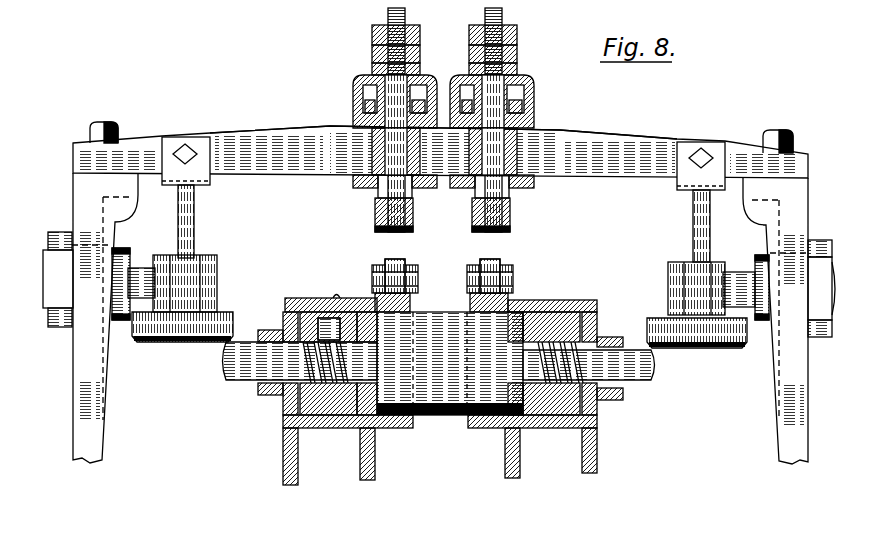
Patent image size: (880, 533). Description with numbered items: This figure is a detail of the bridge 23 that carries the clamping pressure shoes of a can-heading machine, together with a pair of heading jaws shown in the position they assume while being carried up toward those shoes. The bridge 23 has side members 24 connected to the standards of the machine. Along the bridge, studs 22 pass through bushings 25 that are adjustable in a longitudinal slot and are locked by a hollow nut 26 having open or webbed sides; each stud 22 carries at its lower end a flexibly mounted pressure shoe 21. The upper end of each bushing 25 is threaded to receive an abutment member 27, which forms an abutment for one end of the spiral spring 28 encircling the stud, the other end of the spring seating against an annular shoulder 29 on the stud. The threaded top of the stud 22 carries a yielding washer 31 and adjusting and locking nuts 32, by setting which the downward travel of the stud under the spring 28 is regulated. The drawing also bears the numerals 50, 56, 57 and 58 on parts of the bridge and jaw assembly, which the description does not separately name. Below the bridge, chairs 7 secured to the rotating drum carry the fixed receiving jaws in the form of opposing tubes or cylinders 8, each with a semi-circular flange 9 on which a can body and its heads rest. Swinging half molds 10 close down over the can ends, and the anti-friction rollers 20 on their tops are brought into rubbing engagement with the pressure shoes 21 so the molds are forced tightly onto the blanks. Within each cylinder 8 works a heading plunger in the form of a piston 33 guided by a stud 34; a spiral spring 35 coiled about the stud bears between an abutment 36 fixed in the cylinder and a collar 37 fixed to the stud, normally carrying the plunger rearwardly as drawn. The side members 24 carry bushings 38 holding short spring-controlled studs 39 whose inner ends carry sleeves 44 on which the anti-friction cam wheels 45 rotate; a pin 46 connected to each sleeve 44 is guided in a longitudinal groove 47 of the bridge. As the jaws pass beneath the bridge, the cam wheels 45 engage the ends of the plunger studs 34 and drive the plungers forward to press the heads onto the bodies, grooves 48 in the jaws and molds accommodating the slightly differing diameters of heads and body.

The chair 7 is at (363, 466).
The tube or cylinder 8 is at (333, 429).
The semi-circular flange 9 is at (378, 431).
The swinging half mold 10 is at (412, 311).
The anti-friction roller 20 is at (404, 262).
The pressure shoe 21 is at (377, 218).
The stud 22 is at (352, 170).
The bridge 23 is at (583, 150).
The side member 24 is at (440, 318).
The bushing 25 is at (366, 188).
The hollow nut 26 is at (364, 94).
The abutment member 27 is at (430, 90).
The spiral spring 28 is at (352, 176).
The annular shoulder 29 is at (410, 185).
The yielding washer 31 is at (422, 66).
The adjusting and locking nuts 32 is at (374, 28).
The piston 33 is at (557, 303).
The plunger stud 34 is at (640, 382).
The spiral spring 35 is at (284, 390).
The abutment 36 is at (537, 303).
The collar 37 is at (288, 413).
The bushing 38 is at (125, 256).
The short stud 39 is at (155, 275).
The sleeve 44 is at (180, 285).
The cam wheel 45 is at (186, 327).
The pin 46 is at (195, 214).
The groove 47 is at (208, 186).
The groove 48 is at (400, 429).
The spring pocket 50 is at (366, 110).
The screw 56 is at (336, 297).
The end wall lip 57 is at (598, 412).
The bushing insert 58 is at (353, 338).